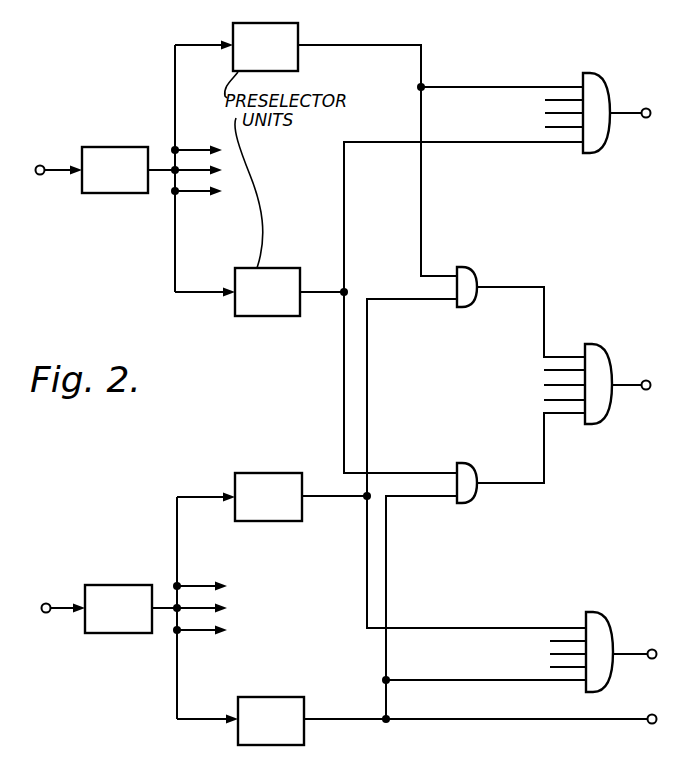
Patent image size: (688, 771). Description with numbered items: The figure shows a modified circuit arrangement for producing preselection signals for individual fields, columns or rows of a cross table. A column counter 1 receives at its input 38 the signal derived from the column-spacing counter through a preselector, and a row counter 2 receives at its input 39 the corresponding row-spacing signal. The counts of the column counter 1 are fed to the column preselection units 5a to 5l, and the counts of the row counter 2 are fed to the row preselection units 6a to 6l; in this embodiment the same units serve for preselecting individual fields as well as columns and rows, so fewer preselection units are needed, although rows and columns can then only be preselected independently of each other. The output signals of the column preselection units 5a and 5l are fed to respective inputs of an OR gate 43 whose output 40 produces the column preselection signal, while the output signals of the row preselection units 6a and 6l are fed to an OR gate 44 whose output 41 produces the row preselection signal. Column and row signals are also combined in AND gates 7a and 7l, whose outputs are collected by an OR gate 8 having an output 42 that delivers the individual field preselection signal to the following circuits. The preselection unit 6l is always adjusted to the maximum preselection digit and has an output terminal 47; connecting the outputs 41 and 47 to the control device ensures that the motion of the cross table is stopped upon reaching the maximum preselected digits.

The column counter 1 is at (120, 183).
The row counter 2 is at (125, 622).
The preselection unit 5a is at (280, 60).
The preselection unit 5l is at (278, 305).
The preselection unit 6a is at (283, 510).
The preselection unit 6l is at (282, 734).
The AND gate 7a is at (474, 276).
The AND gate 7l is at (474, 471).
The OR gate 8 is at (607, 362).
The input 38 is at (36, 167).
The input 39 is at (44, 613).
The output 40 is at (644, 118).
The output 41 is at (653, 634).
The output 42 is at (645, 390).
The OR gate 43 is at (605, 91).
The OR gate 44 is at (606, 624).
The output terminal 47 is at (654, 714).